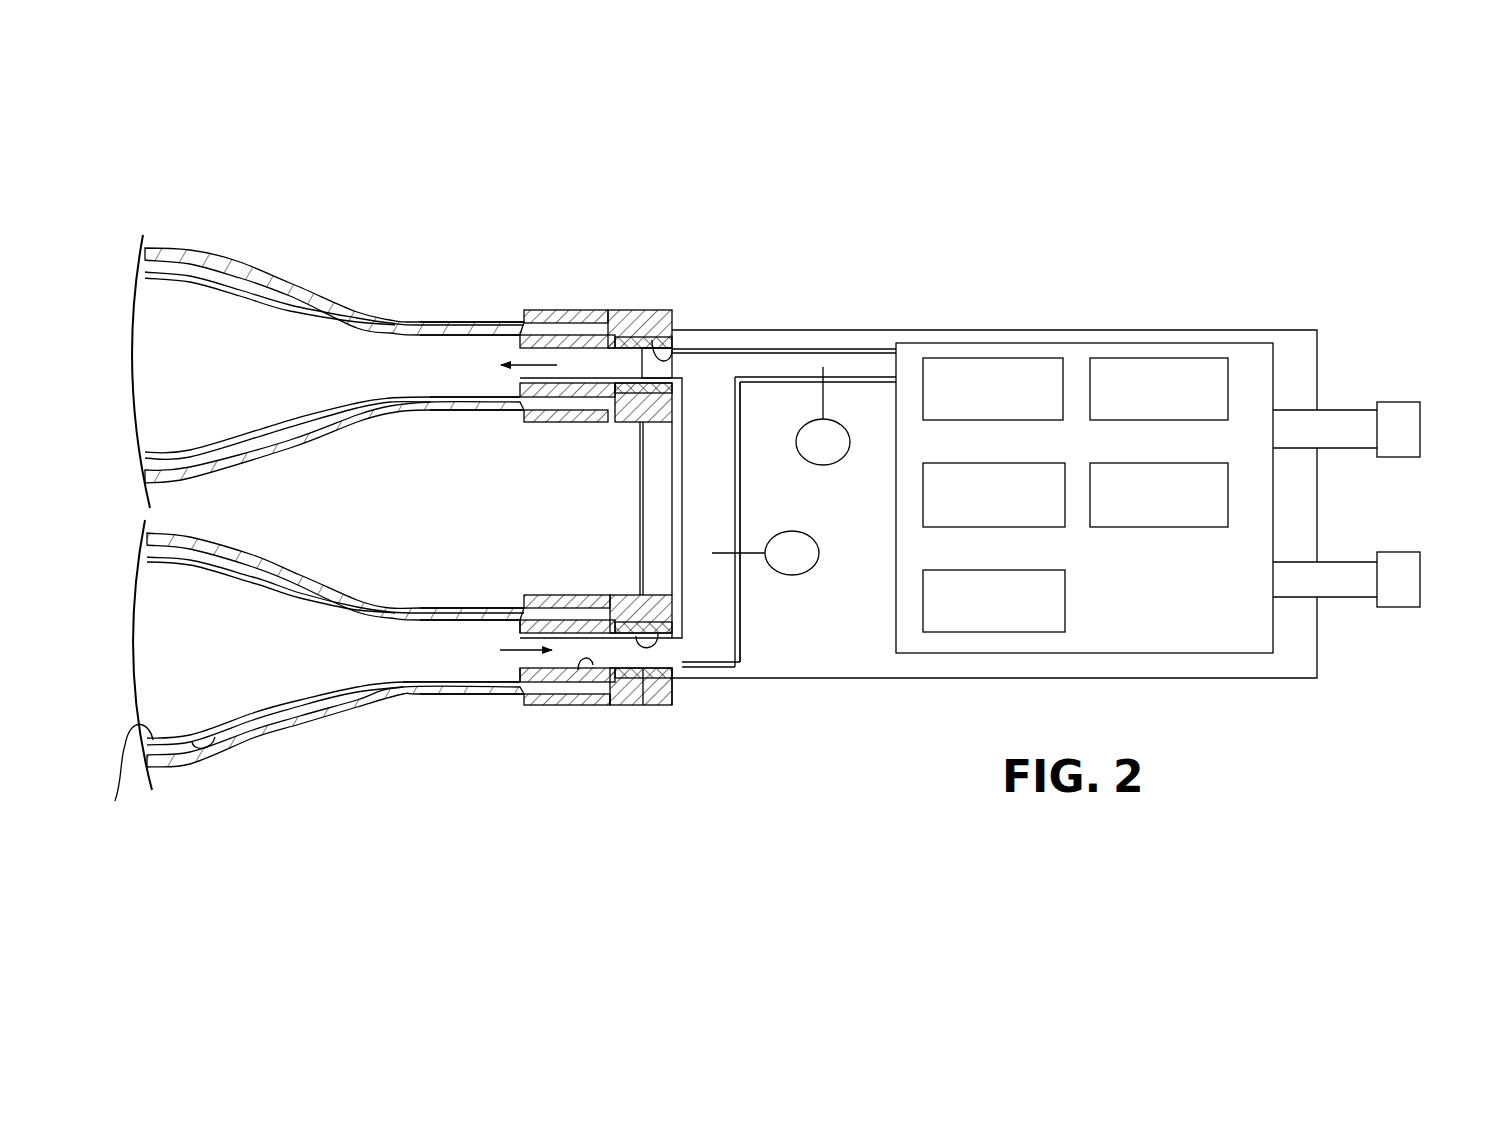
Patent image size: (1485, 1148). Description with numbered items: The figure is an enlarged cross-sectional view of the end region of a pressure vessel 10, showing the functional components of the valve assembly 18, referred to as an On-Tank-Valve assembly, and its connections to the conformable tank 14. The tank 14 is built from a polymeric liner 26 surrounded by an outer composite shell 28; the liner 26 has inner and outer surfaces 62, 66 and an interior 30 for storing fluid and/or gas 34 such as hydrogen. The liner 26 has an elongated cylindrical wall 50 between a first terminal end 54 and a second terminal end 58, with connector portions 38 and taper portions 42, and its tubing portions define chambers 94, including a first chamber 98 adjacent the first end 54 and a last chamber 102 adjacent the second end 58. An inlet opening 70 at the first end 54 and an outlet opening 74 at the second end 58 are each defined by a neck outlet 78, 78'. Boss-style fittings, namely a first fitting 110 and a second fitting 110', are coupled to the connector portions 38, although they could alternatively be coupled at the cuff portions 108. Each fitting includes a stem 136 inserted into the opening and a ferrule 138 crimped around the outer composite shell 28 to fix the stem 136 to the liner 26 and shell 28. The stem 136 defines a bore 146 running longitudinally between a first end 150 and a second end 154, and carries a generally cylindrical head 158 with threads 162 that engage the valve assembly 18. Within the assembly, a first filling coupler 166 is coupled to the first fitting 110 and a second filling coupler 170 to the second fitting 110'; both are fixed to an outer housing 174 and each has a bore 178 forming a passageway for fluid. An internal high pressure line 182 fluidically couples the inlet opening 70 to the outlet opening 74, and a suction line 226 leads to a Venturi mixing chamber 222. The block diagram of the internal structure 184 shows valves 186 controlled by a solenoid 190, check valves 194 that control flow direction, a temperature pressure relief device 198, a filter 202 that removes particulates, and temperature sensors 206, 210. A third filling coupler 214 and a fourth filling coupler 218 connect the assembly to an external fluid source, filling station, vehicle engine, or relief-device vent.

The ear pressure system 10 is at (1137, 186).
The conformable tank 14 is at (225, 215).
The valve assembly 18 is at (855, 297).
The polymeric liner 26 is at (192, 266).
The outer composite shell 28 is at (298, 278).
The interior 30 is at (188, 332).
The fluid and/or gas 34 is at (193, 402).
The connector portion 38 is at (506, 322).
The taper portion 42 is at (320, 697).
The elongated cylindrical wall 50 is at (284, 572).
The first terminal end 54 is at (615, 410).
The second terminal end 58 is at (617, 607).
The inner surface 62 is at (126, 775).
The outer surface 66 is at (192, 742).
The inlet opening 70 is at (497, 362).
The outlet opening 74 is at (508, 650).
The neck outlet 78 is at (472, 366).
The neck outlet 78' is at (463, 651).
The chamber 94 is at (239, 312).
The first chamber 98 is at (334, 366).
The last chamber 102 is at (335, 651).
The cuff portion 108 is at (530, 310).
The first fitting 110 is at (622, 307).
The second fitting 110' is at (628, 707).
The stem 136 is at (515, 625).
The ferrule 138 is at (553, 302).
The bore 146 is at (578, 670).
The first end 150 is at (517, 698).
The second end 154 is at (673, 690).
The head 158 is at (617, 706).
The threads 162 is at (643, 704).
The first filling coupler 166 is at (692, 348).
The second filling coupler 170 is at (672, 648).
The outer housing 174 is at (1243, 324).
The bore 178 is at (652, 340).
The internal high pressure line 182 is at (717, 342).
The internal structure 184 is at (983, 338).
The valve 186 is at (975, 399).
The solenoid 190 is at (1141, 399).
The check valve 194 is at (976, 504).
The temperature pressure relief device 198 is at (976, 611).
The filter 202 is at (1141, 504).
The temperature sensor 206 is at (800, 421).
The temperature sensor 210 is at (802, 585).
The third filling coupler 214 is at (1397, 397).
The fourth filling coupler 218 is at (1397, 612).
The Venturi mixing chamber 222 is at (711, 374).
The suction line 226 is at (745, 481).